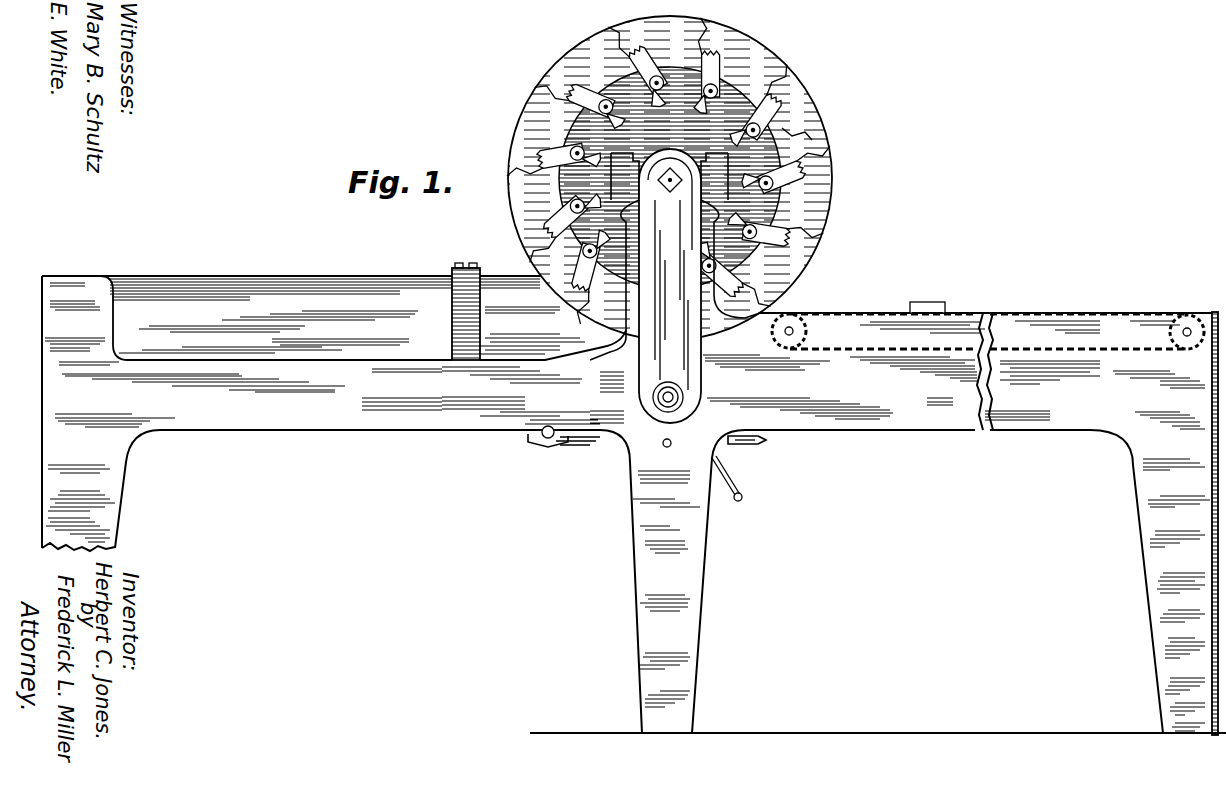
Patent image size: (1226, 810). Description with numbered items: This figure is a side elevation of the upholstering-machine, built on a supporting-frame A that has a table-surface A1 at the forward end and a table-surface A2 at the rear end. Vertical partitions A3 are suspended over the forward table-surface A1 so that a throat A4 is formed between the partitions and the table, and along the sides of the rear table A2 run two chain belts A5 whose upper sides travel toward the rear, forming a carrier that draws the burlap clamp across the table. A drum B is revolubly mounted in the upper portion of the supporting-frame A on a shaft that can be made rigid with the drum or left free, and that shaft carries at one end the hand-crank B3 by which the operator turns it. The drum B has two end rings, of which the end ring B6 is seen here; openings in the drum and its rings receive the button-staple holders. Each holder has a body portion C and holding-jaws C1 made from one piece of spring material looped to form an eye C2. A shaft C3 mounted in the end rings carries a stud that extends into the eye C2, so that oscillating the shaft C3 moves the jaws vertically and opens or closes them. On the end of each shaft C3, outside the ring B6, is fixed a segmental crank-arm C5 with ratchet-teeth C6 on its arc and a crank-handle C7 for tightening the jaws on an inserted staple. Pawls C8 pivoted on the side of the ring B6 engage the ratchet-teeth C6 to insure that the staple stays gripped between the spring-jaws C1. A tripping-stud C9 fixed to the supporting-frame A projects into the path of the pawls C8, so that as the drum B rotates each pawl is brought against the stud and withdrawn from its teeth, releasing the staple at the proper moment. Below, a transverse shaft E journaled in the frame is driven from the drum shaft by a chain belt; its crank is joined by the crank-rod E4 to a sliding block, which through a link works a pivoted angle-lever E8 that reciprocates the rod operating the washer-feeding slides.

The supporting-frame A is at (100, 502).
The table-surface A1 is at (237, 330).
The table-surface A2 is at (1207, 312).
The vertical partitions A3 is at (276, 318).
The throat A4 is at (356, 360).
The chain belts A5 is at (1114, 350).
The drum B is at (670, 178).
The hand-crank B3 is at (686, 394).
The end ring B6 is at (801, 133).
The body portion of button-staple holder C is at (643, 180).
The holding-jaws C1 is at (988, 315).
The eye C2 is at (945, 312).
The shaft C3 is at (780, 190).
The crank-arm C5 is at (568, 125).
The ratchet-teeth C6 is at (772, 108).
The crank-handle C7 is at (716, 67).
The pawls C8 is at (782, 240).
The tripping-stud C9 is at (720, 337).
The shaft E is at (549, 426).
The crank-rod E4 is at (580, 450).
The angle-lever E8 is at (768, 441).